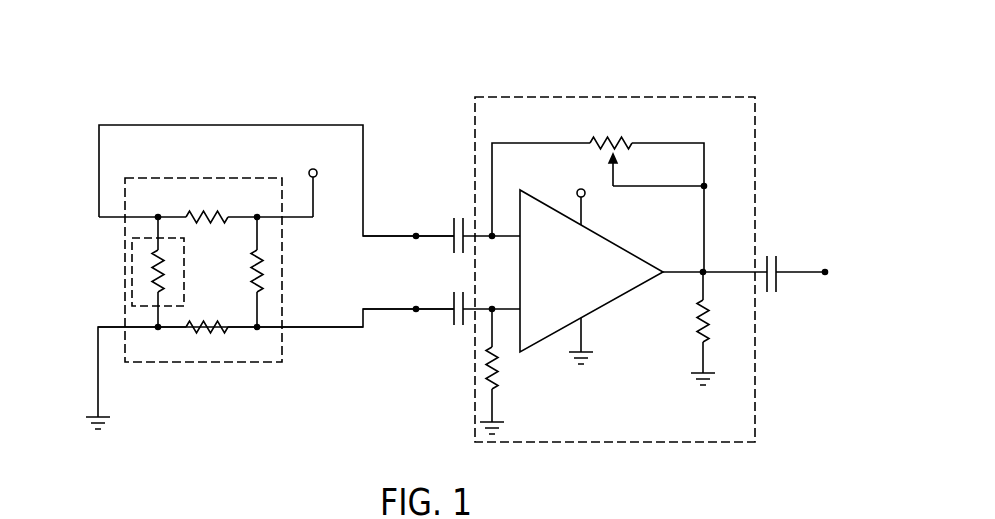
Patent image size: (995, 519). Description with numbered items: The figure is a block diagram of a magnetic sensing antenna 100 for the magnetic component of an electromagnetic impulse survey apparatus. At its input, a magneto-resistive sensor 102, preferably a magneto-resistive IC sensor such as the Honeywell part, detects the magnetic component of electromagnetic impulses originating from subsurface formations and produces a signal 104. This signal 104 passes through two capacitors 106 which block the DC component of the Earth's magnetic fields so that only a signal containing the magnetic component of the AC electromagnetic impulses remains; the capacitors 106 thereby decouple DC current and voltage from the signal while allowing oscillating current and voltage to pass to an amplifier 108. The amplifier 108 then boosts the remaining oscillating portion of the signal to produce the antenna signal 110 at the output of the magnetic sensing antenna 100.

The magnetic sensing antenna 100 is at (464, 230).
The magneto-resistive sensor 102 is at (131, 287).
The signal 104 is at (416, 236).
The capacitors 106 is at (452, 200).
The amplifier 108 is at (756, 132).
The antenna signal 110 is at (803, 276).